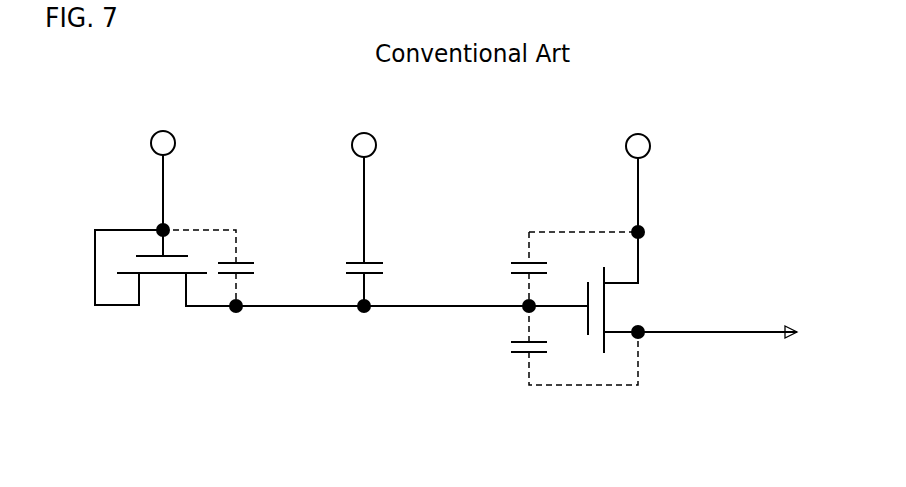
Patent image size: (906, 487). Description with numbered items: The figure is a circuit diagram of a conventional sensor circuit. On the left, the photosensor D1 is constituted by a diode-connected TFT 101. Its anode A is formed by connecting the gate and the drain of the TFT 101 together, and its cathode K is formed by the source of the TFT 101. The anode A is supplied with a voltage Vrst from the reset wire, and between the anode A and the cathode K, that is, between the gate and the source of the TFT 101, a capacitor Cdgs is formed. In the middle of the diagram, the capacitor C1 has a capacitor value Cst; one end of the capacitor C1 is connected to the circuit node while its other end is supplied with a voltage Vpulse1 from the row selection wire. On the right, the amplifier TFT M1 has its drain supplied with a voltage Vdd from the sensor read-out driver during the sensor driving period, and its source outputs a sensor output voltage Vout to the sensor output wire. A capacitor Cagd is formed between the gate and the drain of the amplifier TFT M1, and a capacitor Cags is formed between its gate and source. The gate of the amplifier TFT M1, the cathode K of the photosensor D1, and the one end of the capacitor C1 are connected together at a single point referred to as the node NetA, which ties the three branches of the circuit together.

The TFT 101 is at (130, 272).
The photosensor D1 is at (86, 289).
The capacitor Cdgs is at (247, 262).
The capacitor C1 is at (372, 263).
The capacitor value Cst is at (383, 282).
The capacitor Cagd is at (520, 263).
The capacitor Cags is at (520, 342).
The amplifier TFT M1 is at (604, 277).
The voltage Vrst is at (164, 166).
The voltage Vpulse1 is at (366, 182).
The voltage Vdd is at (639, 170).
The sensor output voltage Vout is at (714, 344).
The anode A is at (156, 217).
The cathode K is at (236, 321).
The node NetA is at (361, 322).